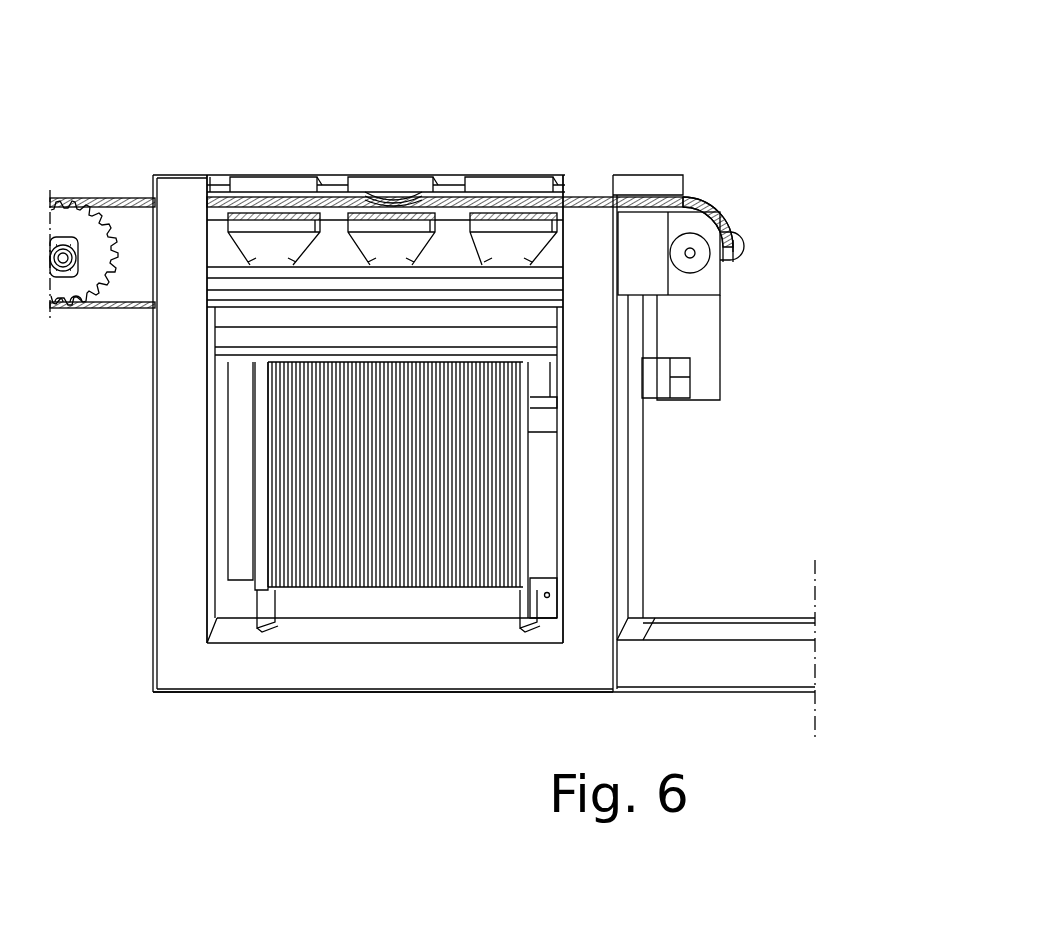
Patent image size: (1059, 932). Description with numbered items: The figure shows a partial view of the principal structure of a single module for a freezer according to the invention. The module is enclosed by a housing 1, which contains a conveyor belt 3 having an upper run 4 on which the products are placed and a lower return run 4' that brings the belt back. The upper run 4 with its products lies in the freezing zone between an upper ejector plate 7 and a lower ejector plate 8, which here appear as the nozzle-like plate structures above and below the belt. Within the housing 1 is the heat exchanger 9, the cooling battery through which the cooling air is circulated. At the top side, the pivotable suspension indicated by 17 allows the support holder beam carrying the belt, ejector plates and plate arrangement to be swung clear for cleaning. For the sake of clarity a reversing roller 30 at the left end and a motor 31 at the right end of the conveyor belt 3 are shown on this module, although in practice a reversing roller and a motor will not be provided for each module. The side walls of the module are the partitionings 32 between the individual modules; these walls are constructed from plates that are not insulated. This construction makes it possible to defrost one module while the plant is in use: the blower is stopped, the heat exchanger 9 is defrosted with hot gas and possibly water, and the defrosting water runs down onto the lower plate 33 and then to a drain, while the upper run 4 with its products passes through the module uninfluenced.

The housing 1 is at (150, 663).
The conveyor belt 3 is at (68, 310).
The upper run 4 is at (391, 212).
The lower return run 4' is at (86, 360).
The upper ejector plate 7 is at (275, 180).
The lower ejector plate 8 is at (263, 240).
The heat exchanger 9 is at (307, 470).
The pivotable suspension 17 is at (390, 195).
The reversing roller 30 is at (60, 203).
The motor 31 is at (725, 248).
The partitionings 32 is at (207, 221).
The lower plate 33 is at (303, 678).